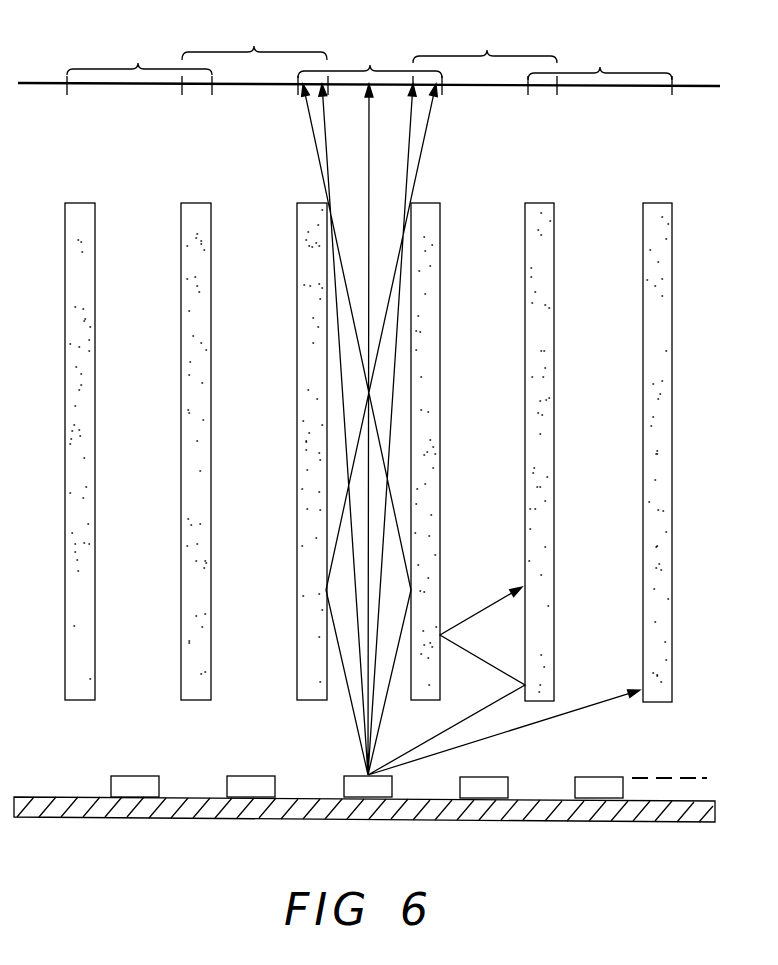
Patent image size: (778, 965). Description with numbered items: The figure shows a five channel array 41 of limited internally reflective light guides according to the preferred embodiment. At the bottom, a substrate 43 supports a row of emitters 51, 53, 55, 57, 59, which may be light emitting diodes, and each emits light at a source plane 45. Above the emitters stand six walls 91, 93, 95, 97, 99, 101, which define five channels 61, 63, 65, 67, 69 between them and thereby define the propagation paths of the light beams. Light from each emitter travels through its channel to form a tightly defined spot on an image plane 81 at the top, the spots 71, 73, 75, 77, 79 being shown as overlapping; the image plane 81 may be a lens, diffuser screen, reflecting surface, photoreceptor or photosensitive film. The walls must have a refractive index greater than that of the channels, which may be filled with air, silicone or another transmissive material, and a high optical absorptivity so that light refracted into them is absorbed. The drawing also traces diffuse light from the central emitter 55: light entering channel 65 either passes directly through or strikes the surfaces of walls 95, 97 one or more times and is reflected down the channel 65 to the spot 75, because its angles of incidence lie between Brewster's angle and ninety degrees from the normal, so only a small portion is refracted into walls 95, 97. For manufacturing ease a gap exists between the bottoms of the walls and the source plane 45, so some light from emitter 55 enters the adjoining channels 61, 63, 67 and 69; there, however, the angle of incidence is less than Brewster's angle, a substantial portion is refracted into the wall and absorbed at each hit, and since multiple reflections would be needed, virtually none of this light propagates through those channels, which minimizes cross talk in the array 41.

The five channel array 41 is at (747, 286).
The substrate 43 is at (600, 815).
The source plane 45 is at (694, 779).
The emitter 51 is at (111, 780).
The emitter 53 is at (227, 780).
The emitter 55 is at (344, 780).
The emitter 57 is at (460, 782).
The emitter 59 is at (575, 782).
The channel 61 is at (130, 688).
The channel 63 is at (252, 688).
The channel 65 is at (341, 688).
The channel 67 is at (494, 210).
The channel 69 is at (610, 208).
The spot 71 is at (138, 62).
The spot 73 is at (254, 46).
The spot 75 is at (370, 65).
The spot 77 is at (487, 50).
The spot 79 is at (600, 67).
The image plane 81 is at (718, 86).
The wall 91 is at (73, 202).
The wall 93 is at (192, 202).
The wall 95 is at (305, 202).
The wall 97 is at (437, 188).
The wall 99 is at (546, 203).
The wall 101 is at (674, 188).